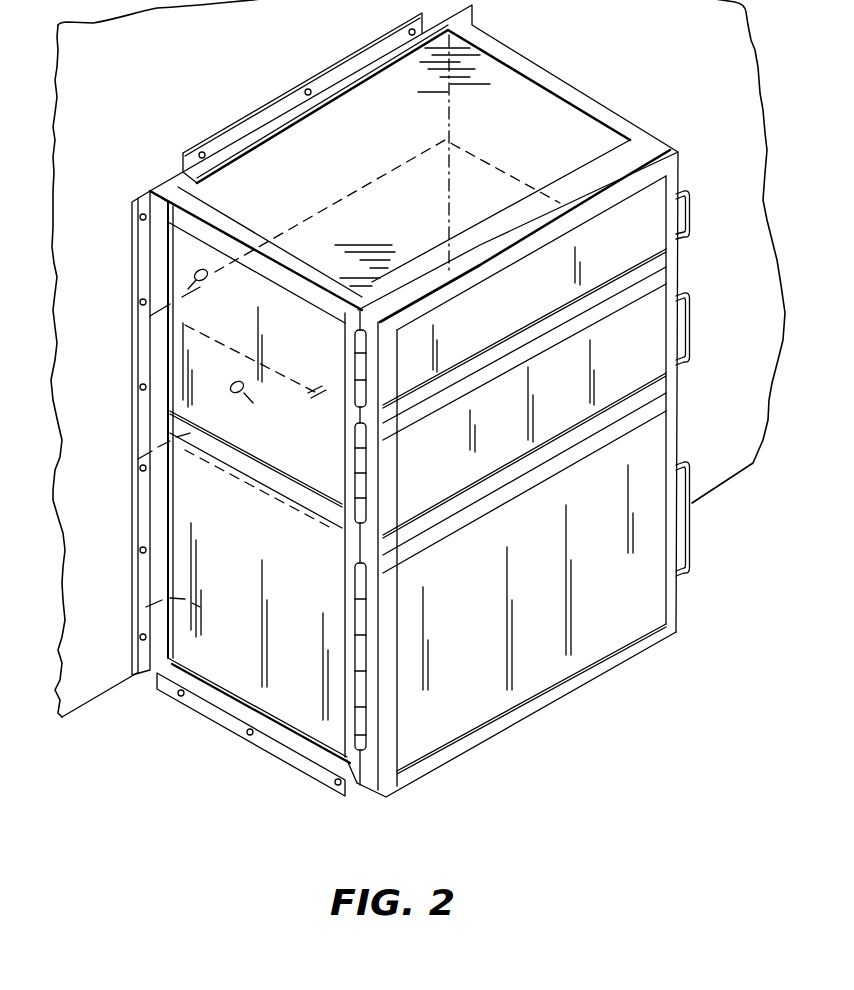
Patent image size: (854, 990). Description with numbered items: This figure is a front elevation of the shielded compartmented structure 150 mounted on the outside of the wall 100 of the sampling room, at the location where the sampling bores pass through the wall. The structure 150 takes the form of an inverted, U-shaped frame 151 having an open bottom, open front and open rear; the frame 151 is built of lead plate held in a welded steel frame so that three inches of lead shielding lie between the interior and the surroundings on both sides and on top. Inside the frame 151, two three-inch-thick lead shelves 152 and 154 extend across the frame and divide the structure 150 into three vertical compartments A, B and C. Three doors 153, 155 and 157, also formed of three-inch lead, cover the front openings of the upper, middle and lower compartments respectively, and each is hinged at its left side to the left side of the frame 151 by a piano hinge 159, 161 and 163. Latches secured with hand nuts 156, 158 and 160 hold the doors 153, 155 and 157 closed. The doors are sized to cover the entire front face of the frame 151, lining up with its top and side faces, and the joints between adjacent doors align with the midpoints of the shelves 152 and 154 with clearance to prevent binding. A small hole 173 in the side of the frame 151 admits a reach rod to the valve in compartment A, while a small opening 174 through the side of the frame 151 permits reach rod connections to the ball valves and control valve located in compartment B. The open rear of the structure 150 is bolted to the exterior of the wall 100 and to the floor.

The wall 100 is at (277, 85).
The shielded compartmented structure 150 is at (628, 114).
The frame 151 is at (552, 117).
The lead shelf 152 is at (320, 396).
The door 153 is at (676, 256).
The lead shelf 154 is at (328, 492).
The door 155 is at (678, 376).
The hand nut 156 is at (699, 201).
The door 157 is at (645, 588).
The hand nut 158 is at (700, 310).
The piano hinge 159 is at (356, 350).
The hand nut 160 is at (705, 475).
The piano hinge 161 is at (355, 460).
The piano hinge 163 is at (358, 647).
The hole 173 is at (205, 279).
The small opening 174 is at (246, 406).